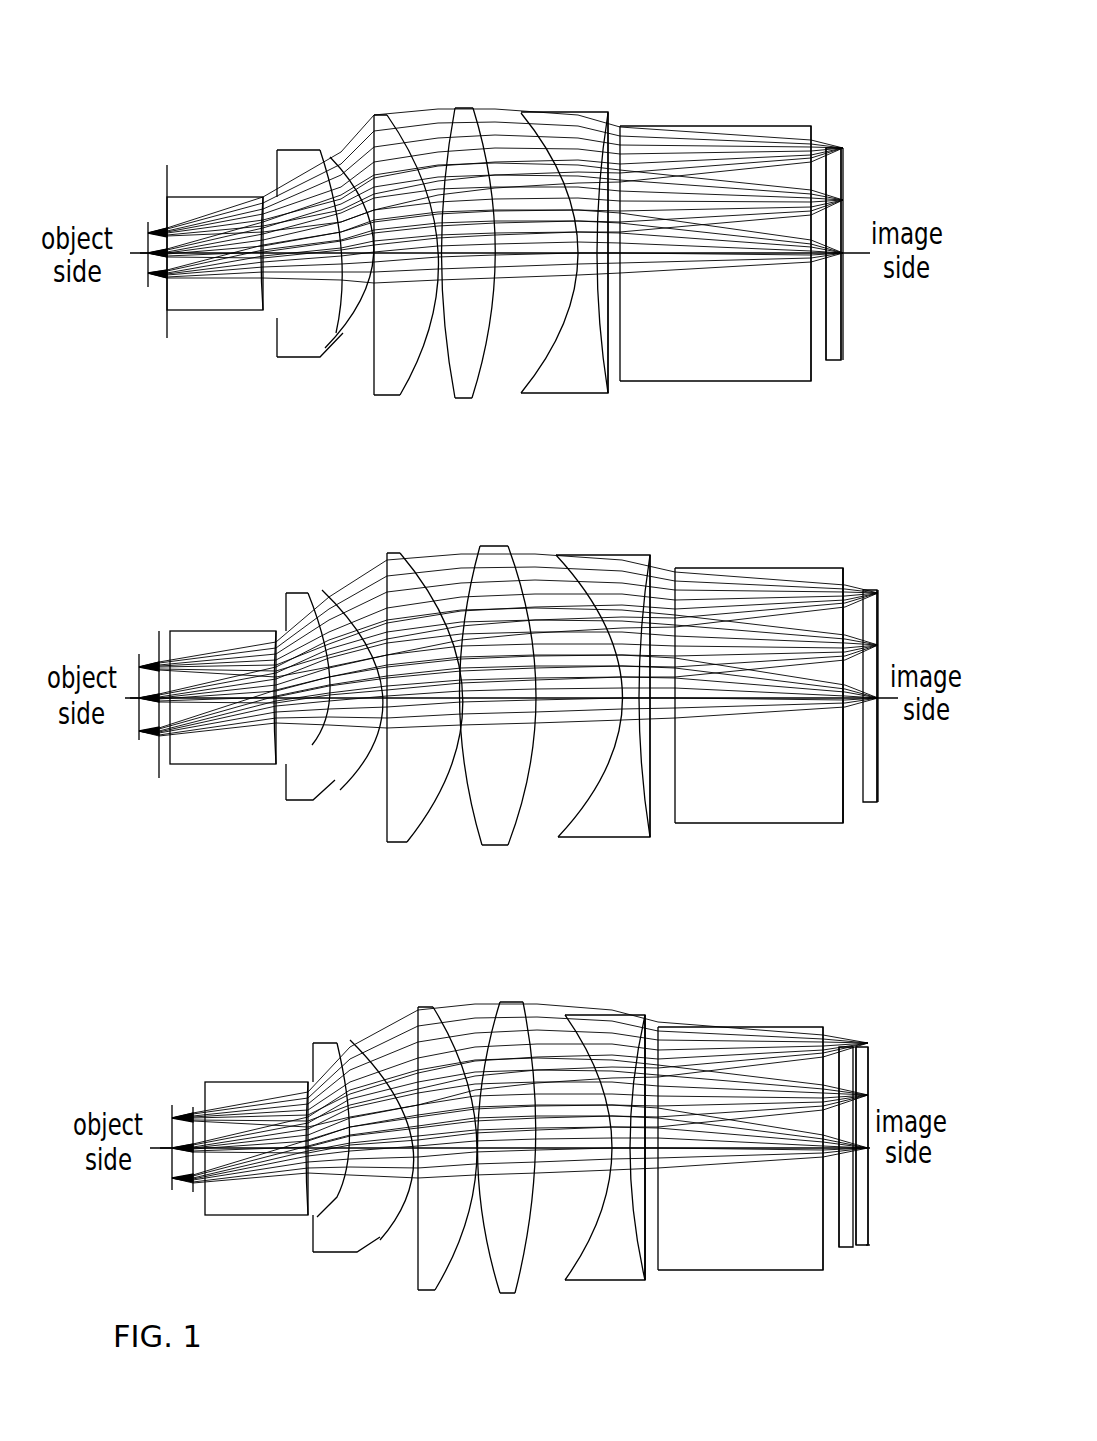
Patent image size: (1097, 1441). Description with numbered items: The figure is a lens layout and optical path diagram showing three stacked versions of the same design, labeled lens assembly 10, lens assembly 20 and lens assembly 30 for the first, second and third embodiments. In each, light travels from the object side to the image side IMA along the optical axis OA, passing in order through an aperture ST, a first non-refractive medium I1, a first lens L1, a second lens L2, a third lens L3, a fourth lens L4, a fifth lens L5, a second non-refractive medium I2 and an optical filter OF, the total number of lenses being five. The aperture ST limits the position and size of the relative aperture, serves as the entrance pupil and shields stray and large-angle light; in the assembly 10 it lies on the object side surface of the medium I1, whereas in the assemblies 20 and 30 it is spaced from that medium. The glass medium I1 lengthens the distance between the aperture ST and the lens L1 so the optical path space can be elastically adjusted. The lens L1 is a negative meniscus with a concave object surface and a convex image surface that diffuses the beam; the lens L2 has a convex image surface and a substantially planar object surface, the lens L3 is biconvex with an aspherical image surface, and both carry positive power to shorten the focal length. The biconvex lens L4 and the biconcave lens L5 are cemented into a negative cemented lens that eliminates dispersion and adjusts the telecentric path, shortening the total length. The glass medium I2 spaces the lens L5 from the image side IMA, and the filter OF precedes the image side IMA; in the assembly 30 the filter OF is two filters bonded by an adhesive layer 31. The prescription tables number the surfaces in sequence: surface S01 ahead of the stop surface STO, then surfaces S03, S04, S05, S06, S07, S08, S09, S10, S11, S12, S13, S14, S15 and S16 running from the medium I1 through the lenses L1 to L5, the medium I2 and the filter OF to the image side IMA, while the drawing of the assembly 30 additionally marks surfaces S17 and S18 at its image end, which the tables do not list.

The lens assembly 10 is at (160, 56).
The lens assembly 20 is at (172, 511).
The lens assembly 30 is at (172, 959).
The adhesive layer 31 is at (860, 1047).
The optical axis OA is at (148, 250).
The aperture ST is at (167, 172).
The stop surface STO is at (167, 285).
The first non-refractive medium I1 is at (222, 197).
The second non-refractive medium I2 is at (730, 126).
The first lens L1 is at (300, 150).
The second lens L2 is at (387, 113).
The third lens L3 is at (464, 108).
The fourth lens L4 is at (532, 112).
The fifth lens L5 is at (594, 112).
The optical filter OF is at (828, 148).
The image side IMA is at (843, 148).
The surface S01 is at (148, 286).
The surface S03 is at (263, 312).
The surface S04 is at (277, 352).
The surface S05 is at (325, 352).
The surface S06 is at (347, 385).
The surface S07 is at (385, 397).
The surface S08 is at (440, 397).
The surface S09 is at (457, 400).
The surface S10 is at (490, 400).
The surface S11 is at (540, 385).
The surface S12 is at (604, 396).
The surface S13 is at (627, 372).
The surface S14 is at (808, 360).
The surface S15 is at (826, 372).
The surface S16 is at (841, 372).
The surface S17 is at (856, 1250).
The surface S18 is at (868, 1250).